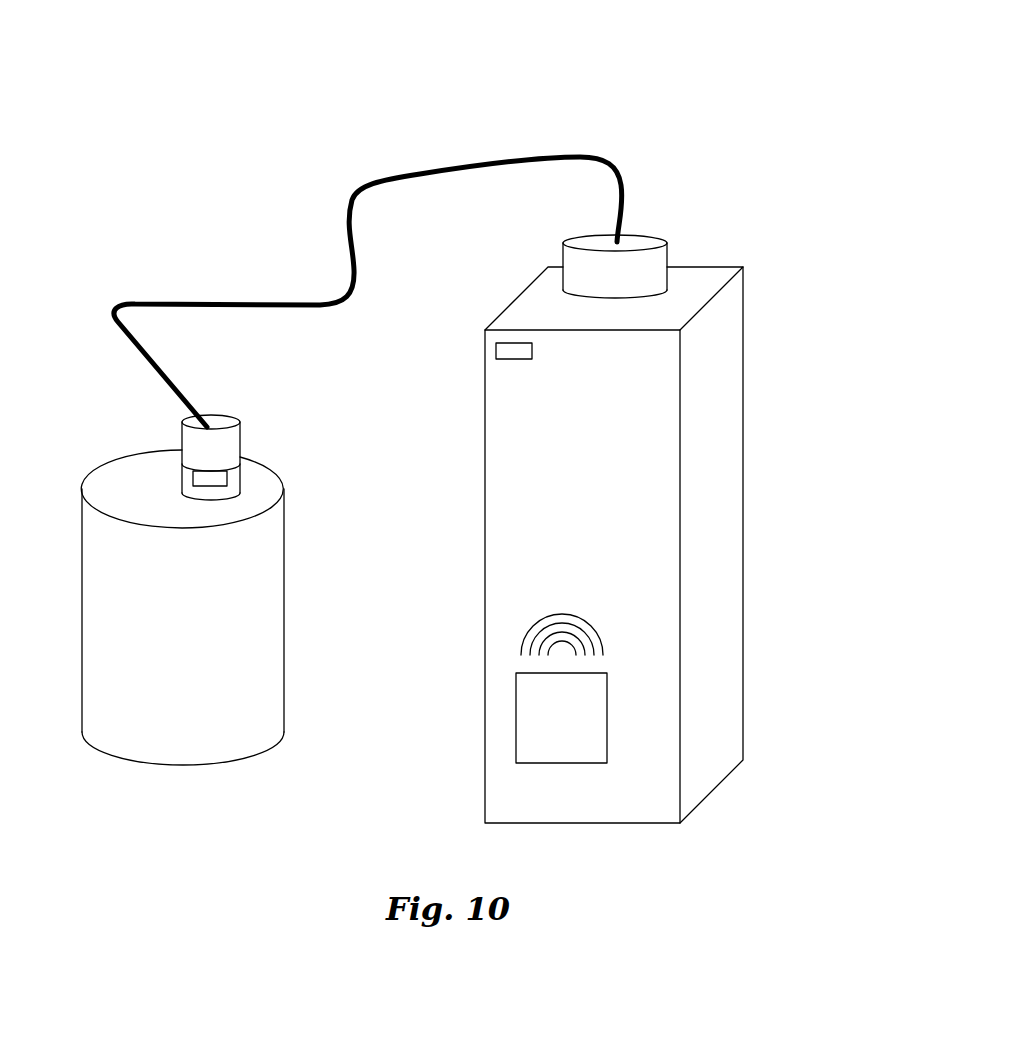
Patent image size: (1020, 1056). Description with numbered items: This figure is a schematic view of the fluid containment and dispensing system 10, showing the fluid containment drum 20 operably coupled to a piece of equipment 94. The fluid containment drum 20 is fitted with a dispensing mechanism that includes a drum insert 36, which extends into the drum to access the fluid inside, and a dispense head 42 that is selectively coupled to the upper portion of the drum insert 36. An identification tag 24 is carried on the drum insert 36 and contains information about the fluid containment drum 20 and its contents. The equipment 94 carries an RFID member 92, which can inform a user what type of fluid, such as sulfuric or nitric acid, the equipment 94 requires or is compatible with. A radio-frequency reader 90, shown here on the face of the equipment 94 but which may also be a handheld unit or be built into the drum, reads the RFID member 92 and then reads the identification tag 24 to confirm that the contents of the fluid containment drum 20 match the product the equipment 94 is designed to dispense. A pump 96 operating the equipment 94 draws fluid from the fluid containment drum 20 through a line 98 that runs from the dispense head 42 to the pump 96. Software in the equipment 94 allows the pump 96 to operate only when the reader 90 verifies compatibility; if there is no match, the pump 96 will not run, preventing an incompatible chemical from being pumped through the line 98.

The fluid containment and dispensing system 10 is at (688, 157).
The fluid containment drum 20 is at (300, 420).
The identification tag 24 is at (215, 479).
The drum insert 36 is at (234, 466).
The dispense head 42 is at (217, 438).
The radio-frequency reader 90 is at (577, 722).
The RFID member 92 is at (532, 351).
The equipment 94 is at (625, 573).
The pump 96 is at (652, 258).
The line 98 is at (563, 153).